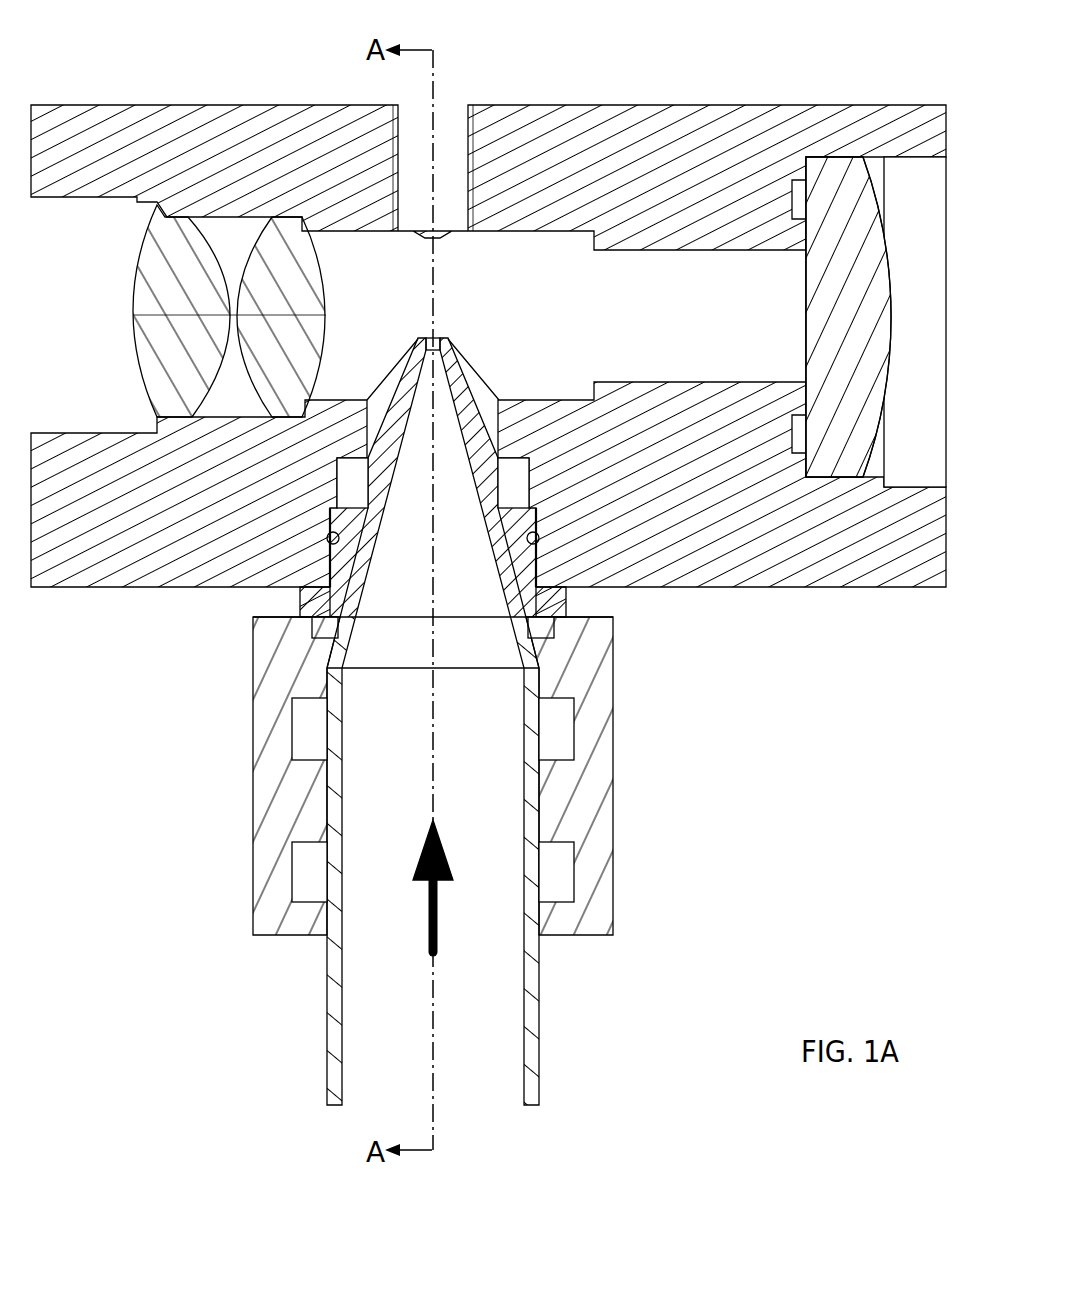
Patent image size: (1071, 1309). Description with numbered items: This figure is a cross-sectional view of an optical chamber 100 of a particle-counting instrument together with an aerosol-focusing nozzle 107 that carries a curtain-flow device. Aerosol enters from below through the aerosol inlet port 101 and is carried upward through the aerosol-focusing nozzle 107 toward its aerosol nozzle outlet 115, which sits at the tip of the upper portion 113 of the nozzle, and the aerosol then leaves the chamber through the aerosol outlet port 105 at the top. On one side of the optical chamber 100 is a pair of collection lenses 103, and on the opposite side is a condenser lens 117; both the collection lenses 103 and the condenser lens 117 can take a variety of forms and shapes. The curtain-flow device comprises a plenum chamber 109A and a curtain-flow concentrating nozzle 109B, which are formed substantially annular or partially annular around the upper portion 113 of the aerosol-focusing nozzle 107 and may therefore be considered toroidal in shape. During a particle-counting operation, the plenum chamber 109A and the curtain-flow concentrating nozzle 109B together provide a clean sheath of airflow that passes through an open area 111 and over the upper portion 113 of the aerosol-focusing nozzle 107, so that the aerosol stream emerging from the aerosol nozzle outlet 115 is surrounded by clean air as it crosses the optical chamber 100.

The optical chamber 100 is at (152, 58).
The aerosol inlet port 101 is at (435, 905).
The collection lenses 103 is at (193, 357).
The aerosol outlet port 105 is at (449, 203).
The aerosol-focusing nozzle 107 is at (505, 575).
The plenum chamber 109A is at (525, 480).
The curtain-flow concentrating nozzle 109B is at (503, 447).
The open area 111 is at (489, 394).
The upper portion 113 is at (457, 370).
The aerosol nozzle outlet 115 is at (436, 332).
The condenser lens 117 is at (838, 338).